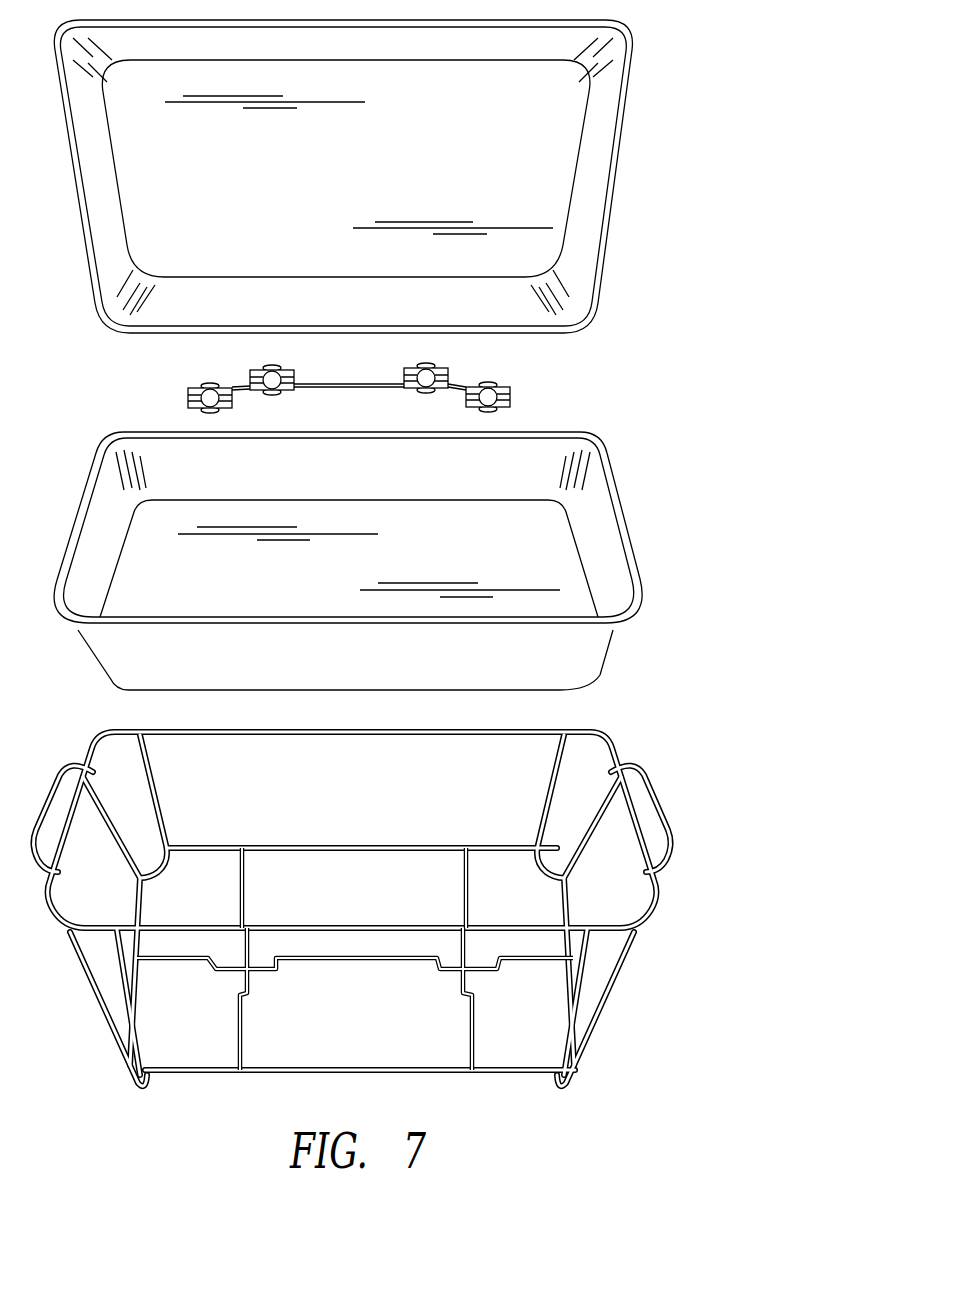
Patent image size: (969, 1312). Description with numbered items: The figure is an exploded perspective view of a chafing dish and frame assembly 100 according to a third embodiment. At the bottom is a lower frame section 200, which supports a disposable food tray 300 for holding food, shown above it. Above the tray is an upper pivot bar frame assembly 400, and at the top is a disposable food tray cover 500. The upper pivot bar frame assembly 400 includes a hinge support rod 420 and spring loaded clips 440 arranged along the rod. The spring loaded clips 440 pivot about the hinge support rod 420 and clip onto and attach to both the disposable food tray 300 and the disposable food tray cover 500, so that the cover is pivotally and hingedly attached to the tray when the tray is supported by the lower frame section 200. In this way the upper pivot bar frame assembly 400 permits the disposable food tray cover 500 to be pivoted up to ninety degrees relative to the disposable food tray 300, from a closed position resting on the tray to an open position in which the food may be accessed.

The chafing dish and frame assembly 100 is at (787, 225).
The lower frame section 200 is at (639, 951).
The disposable food tray 300 is at (516, 554).
The upper pivot bar frame assembly 400 is at (348, 383).
The hinge support rod 420 is at (340, 393).
The spring loaded clips 440 is at (233, 369).
The disposable food tray cover 500 is at (508, 150).